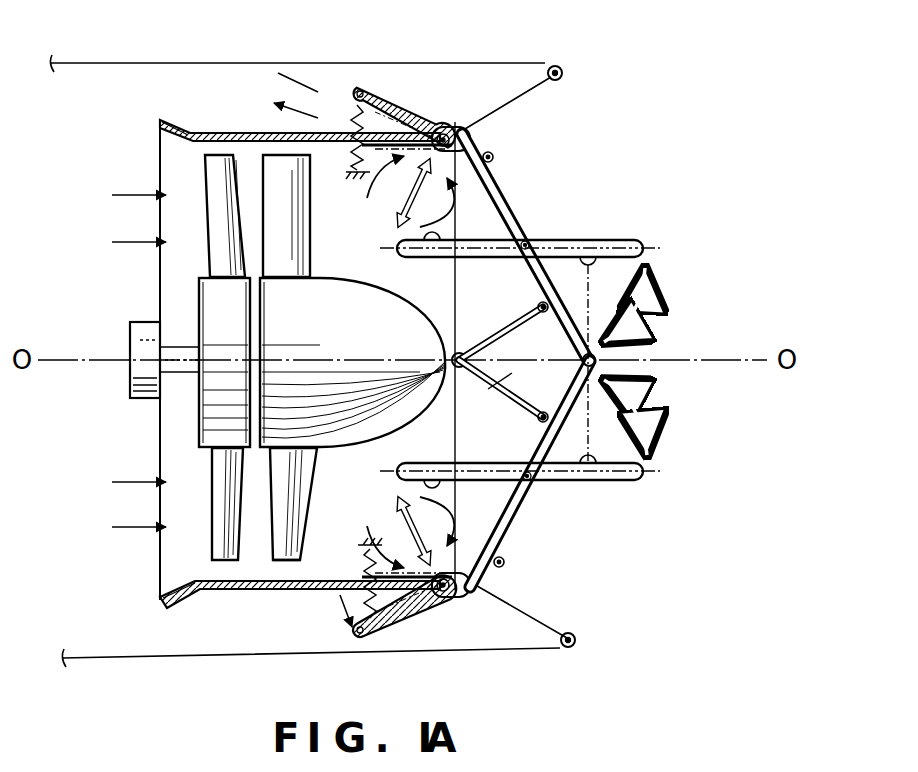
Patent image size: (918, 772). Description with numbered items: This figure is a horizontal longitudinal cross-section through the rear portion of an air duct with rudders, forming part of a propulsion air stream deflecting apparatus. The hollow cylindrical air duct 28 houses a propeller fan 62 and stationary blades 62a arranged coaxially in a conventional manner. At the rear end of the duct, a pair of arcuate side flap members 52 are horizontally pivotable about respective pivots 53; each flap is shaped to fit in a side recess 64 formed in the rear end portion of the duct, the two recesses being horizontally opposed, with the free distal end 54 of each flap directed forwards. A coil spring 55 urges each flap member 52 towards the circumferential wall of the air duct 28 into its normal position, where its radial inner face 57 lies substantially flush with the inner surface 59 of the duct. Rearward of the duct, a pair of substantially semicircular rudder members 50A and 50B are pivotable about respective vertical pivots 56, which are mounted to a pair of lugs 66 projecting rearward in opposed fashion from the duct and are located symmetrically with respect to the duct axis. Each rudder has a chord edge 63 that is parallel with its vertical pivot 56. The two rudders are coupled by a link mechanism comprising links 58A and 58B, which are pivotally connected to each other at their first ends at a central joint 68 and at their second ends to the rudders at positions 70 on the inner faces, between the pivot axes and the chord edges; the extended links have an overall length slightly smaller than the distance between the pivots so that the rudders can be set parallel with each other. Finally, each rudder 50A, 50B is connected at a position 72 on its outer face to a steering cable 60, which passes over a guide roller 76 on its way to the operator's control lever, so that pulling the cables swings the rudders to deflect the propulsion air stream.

The air duct 28 is at (217, 132).
The rudder member 50A is at (514, 522).
The rudder member 50B is at (509, 210).
The side flap member 52 is at (392, 100).
The pivot 53 is at (453, 127).
The distal end 54 is at (358, 104).
The coil spring 55 is at (340, 125).
The vertical pivot 56 is at (530, 242).
The radial inner face 57 is at (412, 132).
The link 58A is at (532, 418).
The link 58B is at (520, 322).
The inner surface 59 is at (187, 138).
The steering cable 60 is at (90, 62).
The propeller fan 62 is at (210, 548).
The stationary blades 62a is at (286, 591).
The chord edge 63 is at (600, 355).
The side recess 64 is at (343, 143).
The lug 66 is at (520, 400).
The center pivot 68 is at (464, 353).
The connection position 70 is at (545, 410).
The connection position 72 is at (494, 158).
The guide roller 76 is at (553, 65).